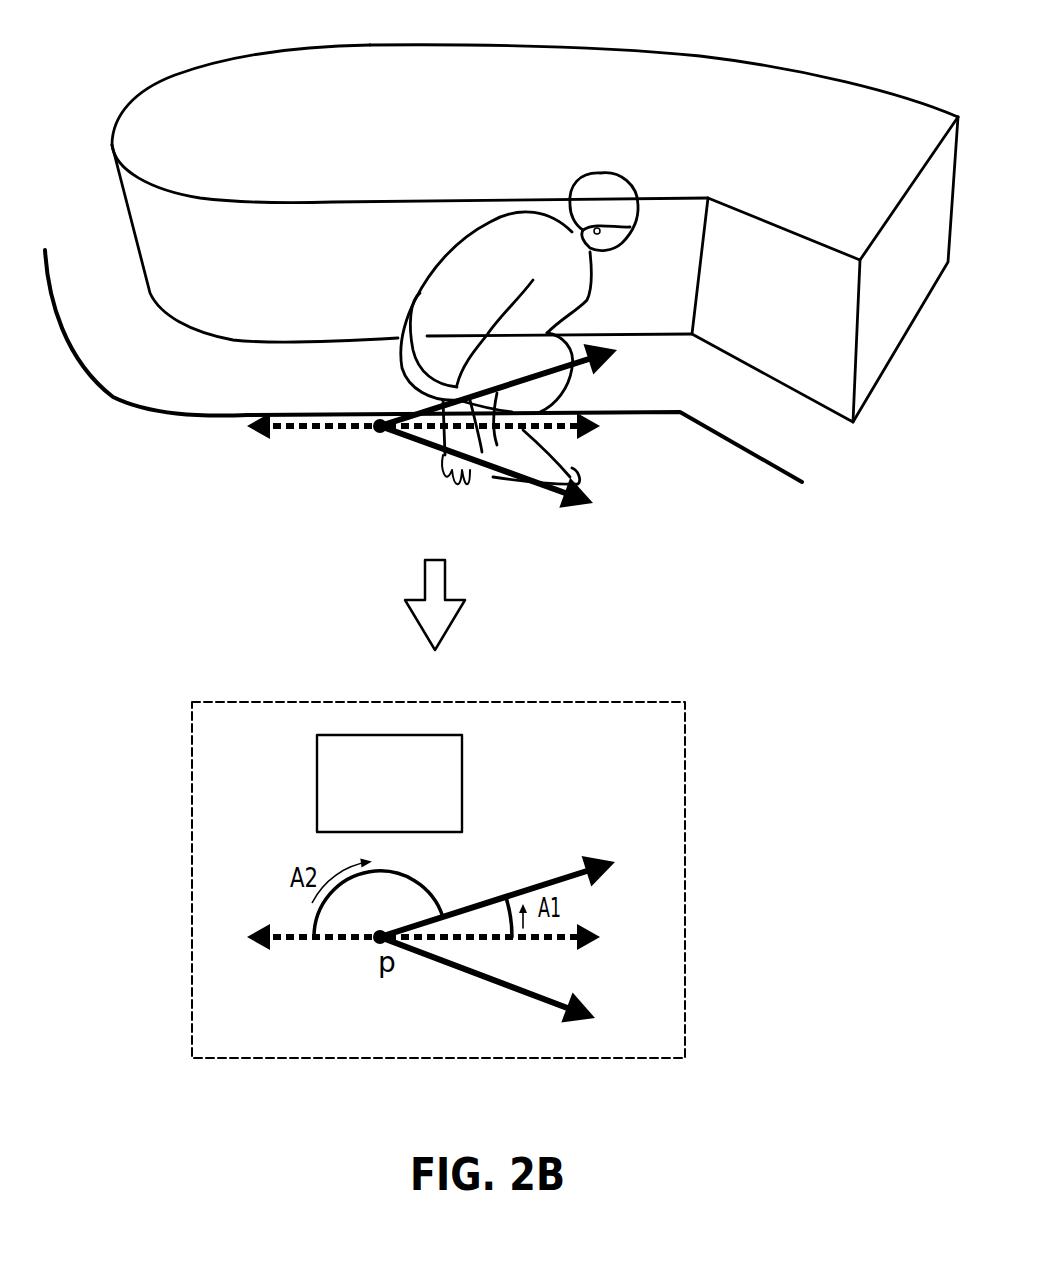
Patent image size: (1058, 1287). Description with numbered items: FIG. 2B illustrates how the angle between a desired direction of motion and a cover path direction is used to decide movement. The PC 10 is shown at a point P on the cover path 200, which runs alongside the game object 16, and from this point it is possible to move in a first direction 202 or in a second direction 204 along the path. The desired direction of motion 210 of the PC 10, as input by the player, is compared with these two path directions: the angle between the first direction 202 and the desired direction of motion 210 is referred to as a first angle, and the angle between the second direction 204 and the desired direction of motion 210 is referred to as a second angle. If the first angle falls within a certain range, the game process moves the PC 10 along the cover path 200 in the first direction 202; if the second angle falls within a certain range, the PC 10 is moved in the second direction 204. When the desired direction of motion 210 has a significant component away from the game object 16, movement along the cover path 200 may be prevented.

The PC 10 is at (460, 219).
The game object 16 is at (794, 143).
The cover path 200 is at (99, 393).
The first direction 202 is at (565, 436).
The second direction 204 is at (293, 432).
The desired direction of motion 210 is at (601, 345).